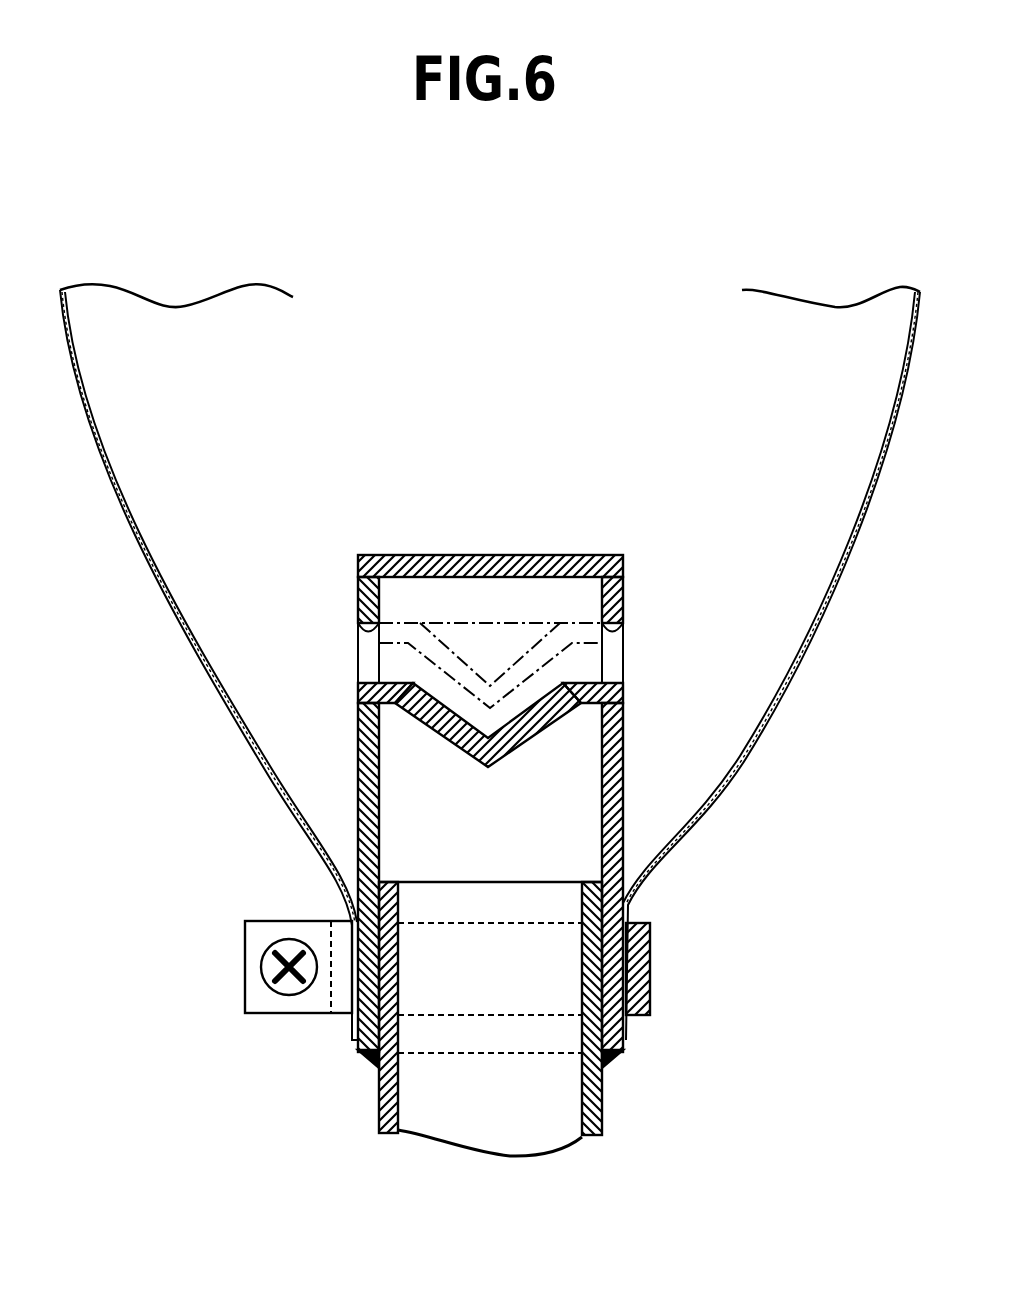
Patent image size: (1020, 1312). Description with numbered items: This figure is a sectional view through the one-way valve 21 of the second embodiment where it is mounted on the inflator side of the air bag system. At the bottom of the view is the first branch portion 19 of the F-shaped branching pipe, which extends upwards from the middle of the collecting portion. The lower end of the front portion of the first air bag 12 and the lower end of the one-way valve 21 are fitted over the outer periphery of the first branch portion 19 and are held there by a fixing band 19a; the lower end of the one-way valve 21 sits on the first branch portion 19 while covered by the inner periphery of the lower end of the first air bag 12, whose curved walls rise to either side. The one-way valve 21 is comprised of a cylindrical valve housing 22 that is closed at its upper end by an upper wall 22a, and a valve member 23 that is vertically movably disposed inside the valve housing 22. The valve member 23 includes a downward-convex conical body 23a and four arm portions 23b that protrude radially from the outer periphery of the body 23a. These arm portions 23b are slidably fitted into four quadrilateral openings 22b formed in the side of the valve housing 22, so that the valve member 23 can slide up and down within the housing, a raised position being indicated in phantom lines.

The first air bag 12 is at (160, 607).
The first branch portion 19 is at (577, 1019).
The fixing band 19a is at (650, 975).
The one-way valve 21 is at (664, 576).
The valve housing 22 is at (505, 742).
The upper wall 22a is at (438, 555).
The quadrilateral openings 22b is at (357, 640).
The valve member 23 is at (494, 766).
The conical body 23a is at (448, 728).
The arm portions 23b is at (357, 690).